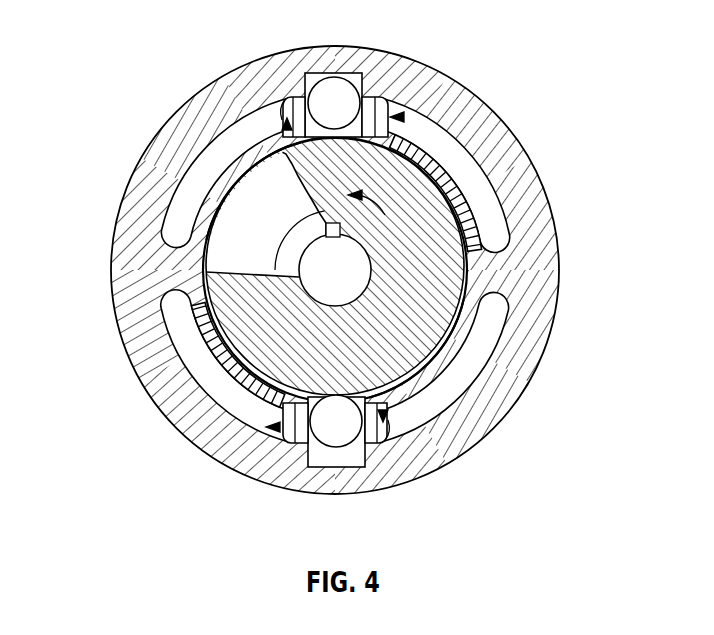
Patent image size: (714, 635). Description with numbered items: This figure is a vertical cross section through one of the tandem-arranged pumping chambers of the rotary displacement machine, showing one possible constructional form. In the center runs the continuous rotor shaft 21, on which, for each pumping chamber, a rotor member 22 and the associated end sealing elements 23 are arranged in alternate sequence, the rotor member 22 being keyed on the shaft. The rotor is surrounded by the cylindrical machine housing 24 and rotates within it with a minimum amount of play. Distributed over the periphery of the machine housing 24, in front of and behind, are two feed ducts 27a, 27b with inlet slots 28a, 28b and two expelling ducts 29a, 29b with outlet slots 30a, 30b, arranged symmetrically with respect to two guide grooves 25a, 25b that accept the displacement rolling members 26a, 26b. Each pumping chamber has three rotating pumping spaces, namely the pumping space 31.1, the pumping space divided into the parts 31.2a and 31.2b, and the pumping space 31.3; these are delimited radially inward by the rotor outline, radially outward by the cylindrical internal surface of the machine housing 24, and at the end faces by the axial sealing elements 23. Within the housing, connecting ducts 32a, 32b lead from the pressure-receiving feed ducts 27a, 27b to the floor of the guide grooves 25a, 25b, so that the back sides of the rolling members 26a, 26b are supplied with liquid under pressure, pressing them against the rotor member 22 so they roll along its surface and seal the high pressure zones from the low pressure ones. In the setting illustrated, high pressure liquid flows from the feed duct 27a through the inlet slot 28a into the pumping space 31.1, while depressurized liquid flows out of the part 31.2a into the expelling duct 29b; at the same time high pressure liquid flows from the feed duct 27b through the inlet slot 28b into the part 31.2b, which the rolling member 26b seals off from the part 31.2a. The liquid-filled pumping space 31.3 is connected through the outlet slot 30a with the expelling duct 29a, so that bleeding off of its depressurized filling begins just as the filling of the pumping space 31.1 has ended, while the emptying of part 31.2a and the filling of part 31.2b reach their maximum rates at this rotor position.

The rotor shaft 21 is at (350, 288).
The rotor member 22 is at (385, 352).
The end sealing elements 23 is at (245, 235).
The machine housing 24 is at (453, 107).
The guide groove 25a is at (355, 74).
The guide groove 25b is at (322, 460).
The displacement rolling member 26a is at (323, 97).
The displacement rolling member 26b is at (320, 430).
The feed duct 27a is at (215, 145).
The feed duct 27b is at (437, 407).
The inlet slot 28a is at (283, 122).
The inlet slot 28b is at (387, 453).
The expelling duct 29a is at (455, 163).
The expelling duct 29b is at (208, 382).
The outlet slot 30a is at (388, 92).
The outlet slot 30b is at (282, 450).
The pumping space 31.1 is at (223, 202).
The part of the pumping space 31.2a is at (268, 415).
The part of the pumping space 31.2b is at (387, 392).
The pumping space 31.3 is at (457, 225).
The connecting duct 32a is at (290, 133).
The connecting duct 32b is at (370, 450).